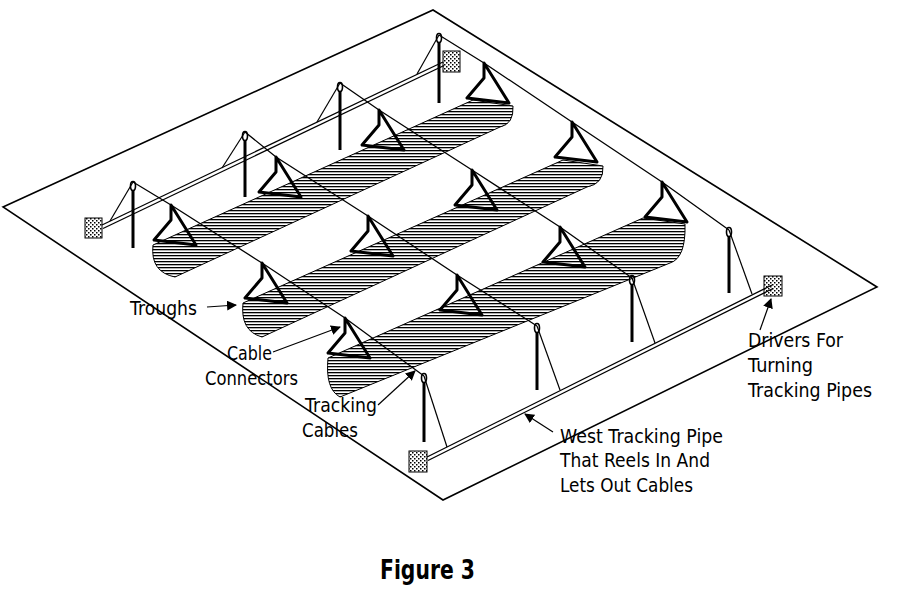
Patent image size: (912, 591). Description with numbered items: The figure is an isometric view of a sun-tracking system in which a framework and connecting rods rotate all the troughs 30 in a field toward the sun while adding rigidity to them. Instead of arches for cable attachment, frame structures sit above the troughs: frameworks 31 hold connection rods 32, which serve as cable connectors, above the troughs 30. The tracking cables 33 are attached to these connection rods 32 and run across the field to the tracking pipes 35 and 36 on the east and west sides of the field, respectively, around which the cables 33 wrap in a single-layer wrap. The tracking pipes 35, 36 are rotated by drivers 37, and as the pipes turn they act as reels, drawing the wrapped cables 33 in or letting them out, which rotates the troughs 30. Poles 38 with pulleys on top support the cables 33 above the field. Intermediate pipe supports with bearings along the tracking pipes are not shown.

The trough 30 is at (415, 322).
The framework 31 is at (468, 182).
The connection rod 32 is at (568, 126).
The cable 33 is at (598, 130).
The tracking pipe 35 is at (283, 138).
The tracking pipe 36 is at (622, 360).
The driver 37 is at (451, 50).
The pole 38 is at (628, 292).